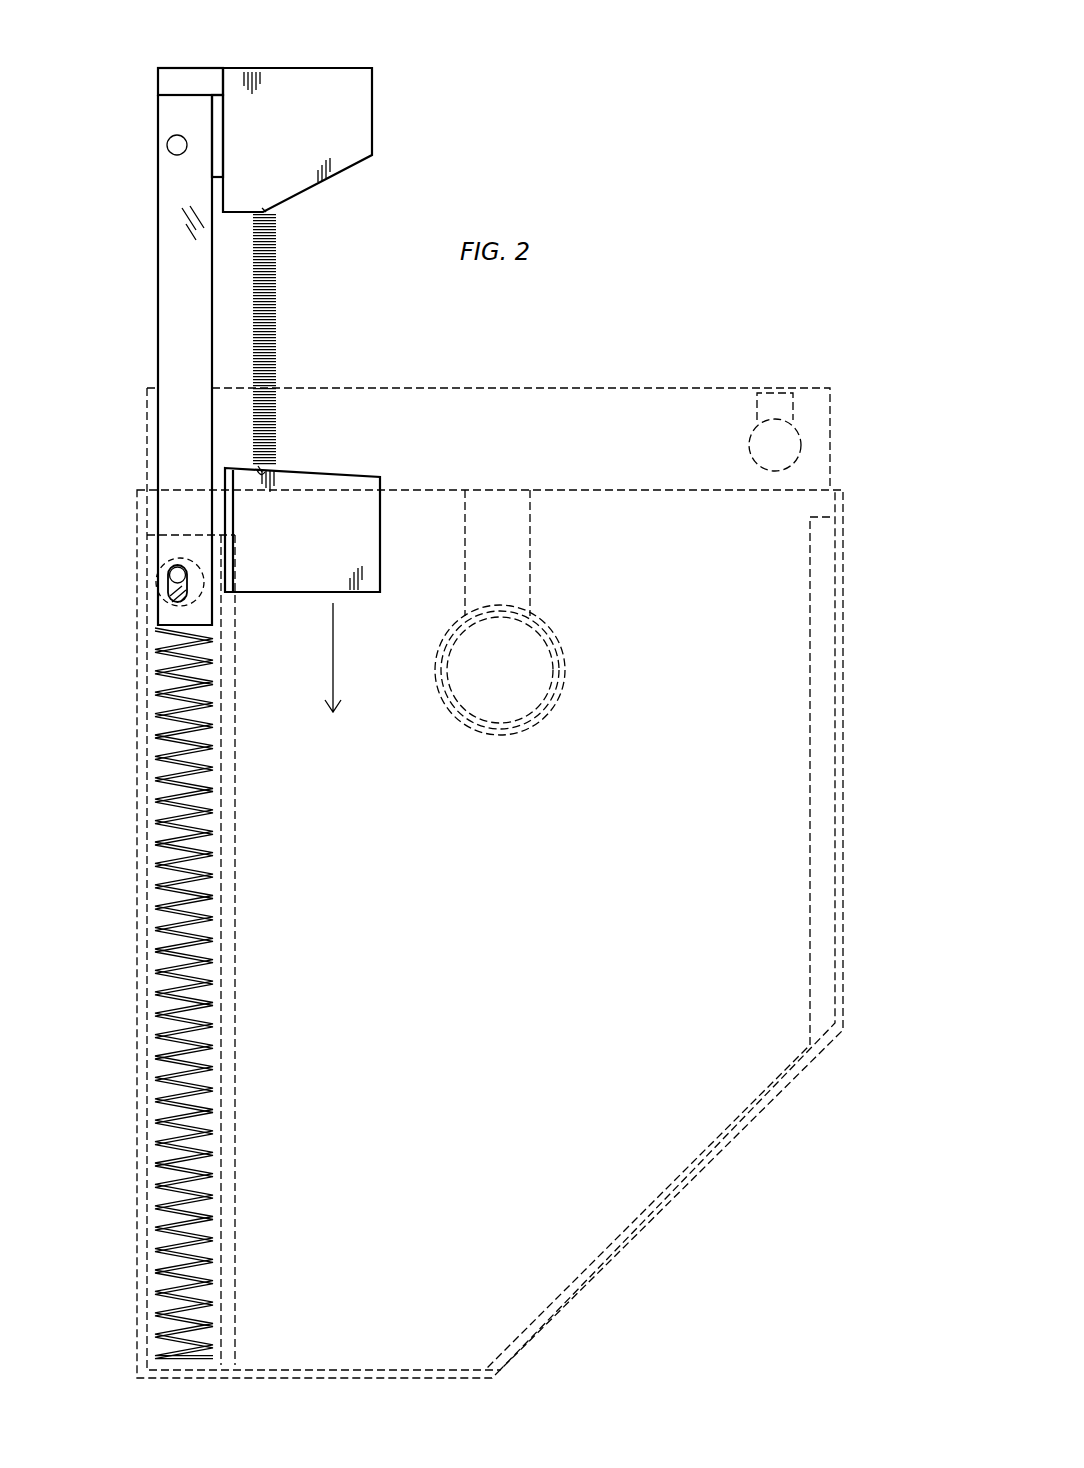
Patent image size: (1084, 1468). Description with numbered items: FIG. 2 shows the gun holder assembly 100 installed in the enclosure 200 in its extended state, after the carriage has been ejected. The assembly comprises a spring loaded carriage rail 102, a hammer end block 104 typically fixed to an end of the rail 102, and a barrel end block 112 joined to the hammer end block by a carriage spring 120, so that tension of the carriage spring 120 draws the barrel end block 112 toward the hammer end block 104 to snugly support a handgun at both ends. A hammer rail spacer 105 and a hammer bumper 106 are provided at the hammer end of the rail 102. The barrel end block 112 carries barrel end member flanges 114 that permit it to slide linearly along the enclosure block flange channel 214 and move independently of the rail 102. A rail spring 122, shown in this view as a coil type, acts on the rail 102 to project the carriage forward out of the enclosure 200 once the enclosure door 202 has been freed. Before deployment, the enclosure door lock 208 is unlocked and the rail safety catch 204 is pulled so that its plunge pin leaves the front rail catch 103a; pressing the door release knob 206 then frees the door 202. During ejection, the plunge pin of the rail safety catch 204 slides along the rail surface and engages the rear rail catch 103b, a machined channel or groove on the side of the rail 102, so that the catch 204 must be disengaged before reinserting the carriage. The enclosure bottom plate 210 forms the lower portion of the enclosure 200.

The gun holder assembly 100 is at (607, 288).
The carriage rail 102 is at (160, 320).
The front rail catch 103a is at (167, 148).
The rear rail catch 103b is at (168, 590).
The hammer end block 104 is at (295, 83).
The hammer rail spacer 105 is at (217, 160).
The hammer bumper 106 is at (178, 82).
The barrel end block 112 is at (312, 560).
The barrel end member flange 114 is at (233, 580).
The carriage spring 120 is at (276, 352).
The rail spring 122 is at (158, 1043).
The enclosure 200 is at (848, 862).
The enclosure door 202 is at (462, 392).
The rail safety catch 204 is at (162, 600).
The door release knob 206 is at (565, 655).
The enclosure door lock 208 is at (758, 405).
The enclosure bottom plate 210 is at (822, 642).
The enclosure block flange channel 214 is at (236, 1275).